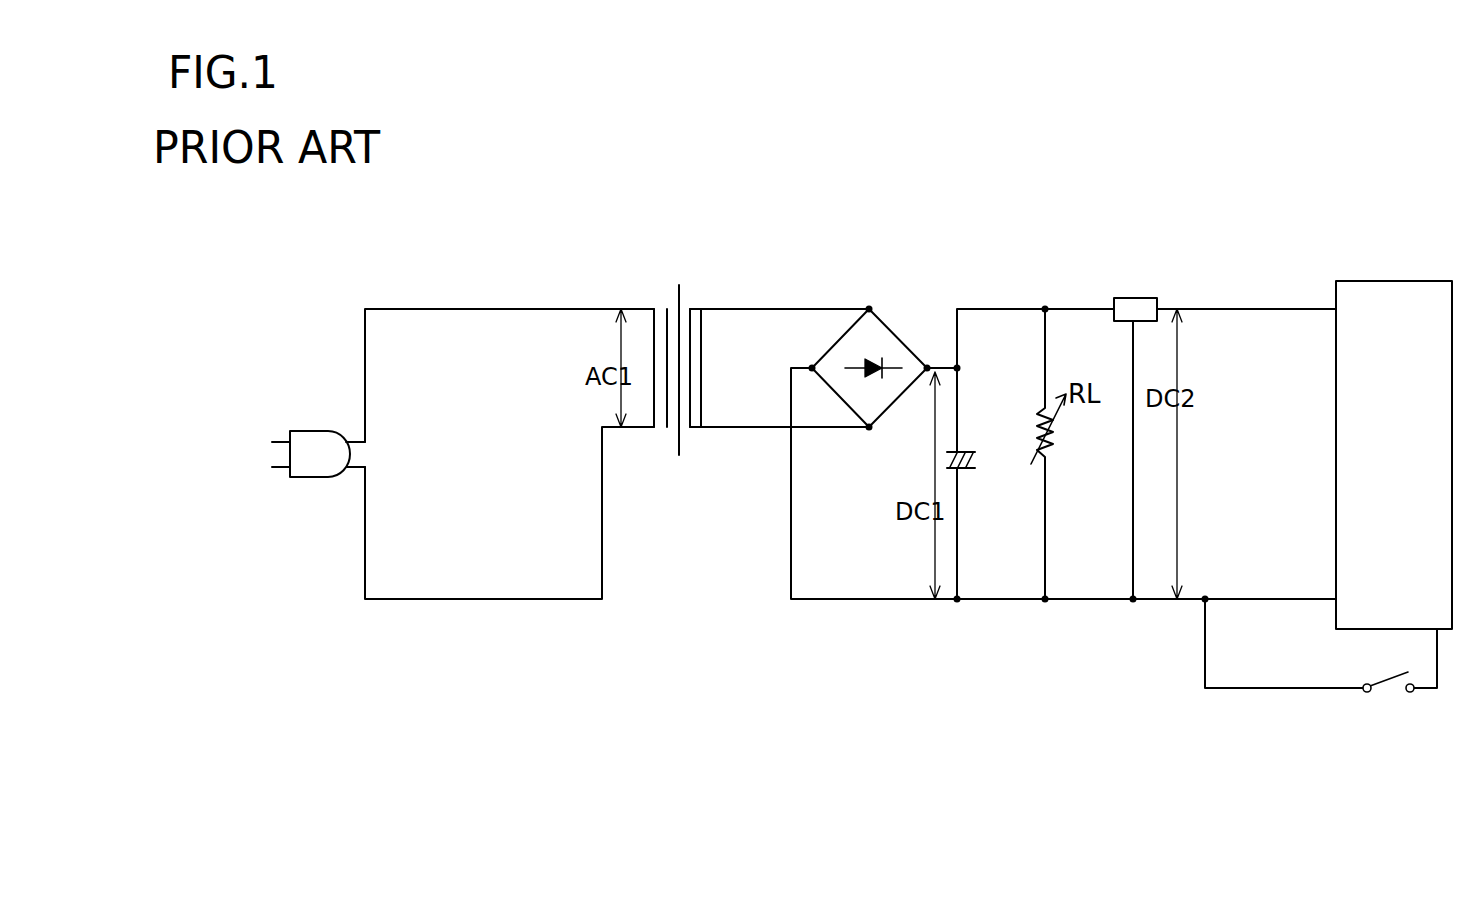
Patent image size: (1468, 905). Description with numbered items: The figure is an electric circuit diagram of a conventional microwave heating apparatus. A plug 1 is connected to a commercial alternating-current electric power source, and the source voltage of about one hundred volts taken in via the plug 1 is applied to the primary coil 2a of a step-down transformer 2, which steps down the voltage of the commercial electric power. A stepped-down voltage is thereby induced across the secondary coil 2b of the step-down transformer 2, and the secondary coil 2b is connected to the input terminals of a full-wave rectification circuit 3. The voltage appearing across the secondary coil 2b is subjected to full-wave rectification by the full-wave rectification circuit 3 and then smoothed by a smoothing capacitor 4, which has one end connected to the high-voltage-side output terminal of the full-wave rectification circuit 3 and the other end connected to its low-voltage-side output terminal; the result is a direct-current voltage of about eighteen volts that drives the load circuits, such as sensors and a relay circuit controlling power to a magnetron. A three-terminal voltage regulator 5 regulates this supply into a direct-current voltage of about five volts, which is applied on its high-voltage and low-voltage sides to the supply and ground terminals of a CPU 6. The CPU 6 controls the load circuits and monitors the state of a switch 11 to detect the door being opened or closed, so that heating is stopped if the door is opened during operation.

The plug 1 is at (318, 431).
The step-down transformer 2 is at (686, 331).
The primary coil 2a is at (661, 318).
The secondary coil 2b is at (695, 318).
The full-wave rectification circuit 3 is at (898, 338).
The smoothing capacitor 4 is at (980, 462).
The three-terminal voltage regulator 5 is at (1139, 298).
The CPU 6 is at (1428, 281).
The switch 11 is at (1373, 683).